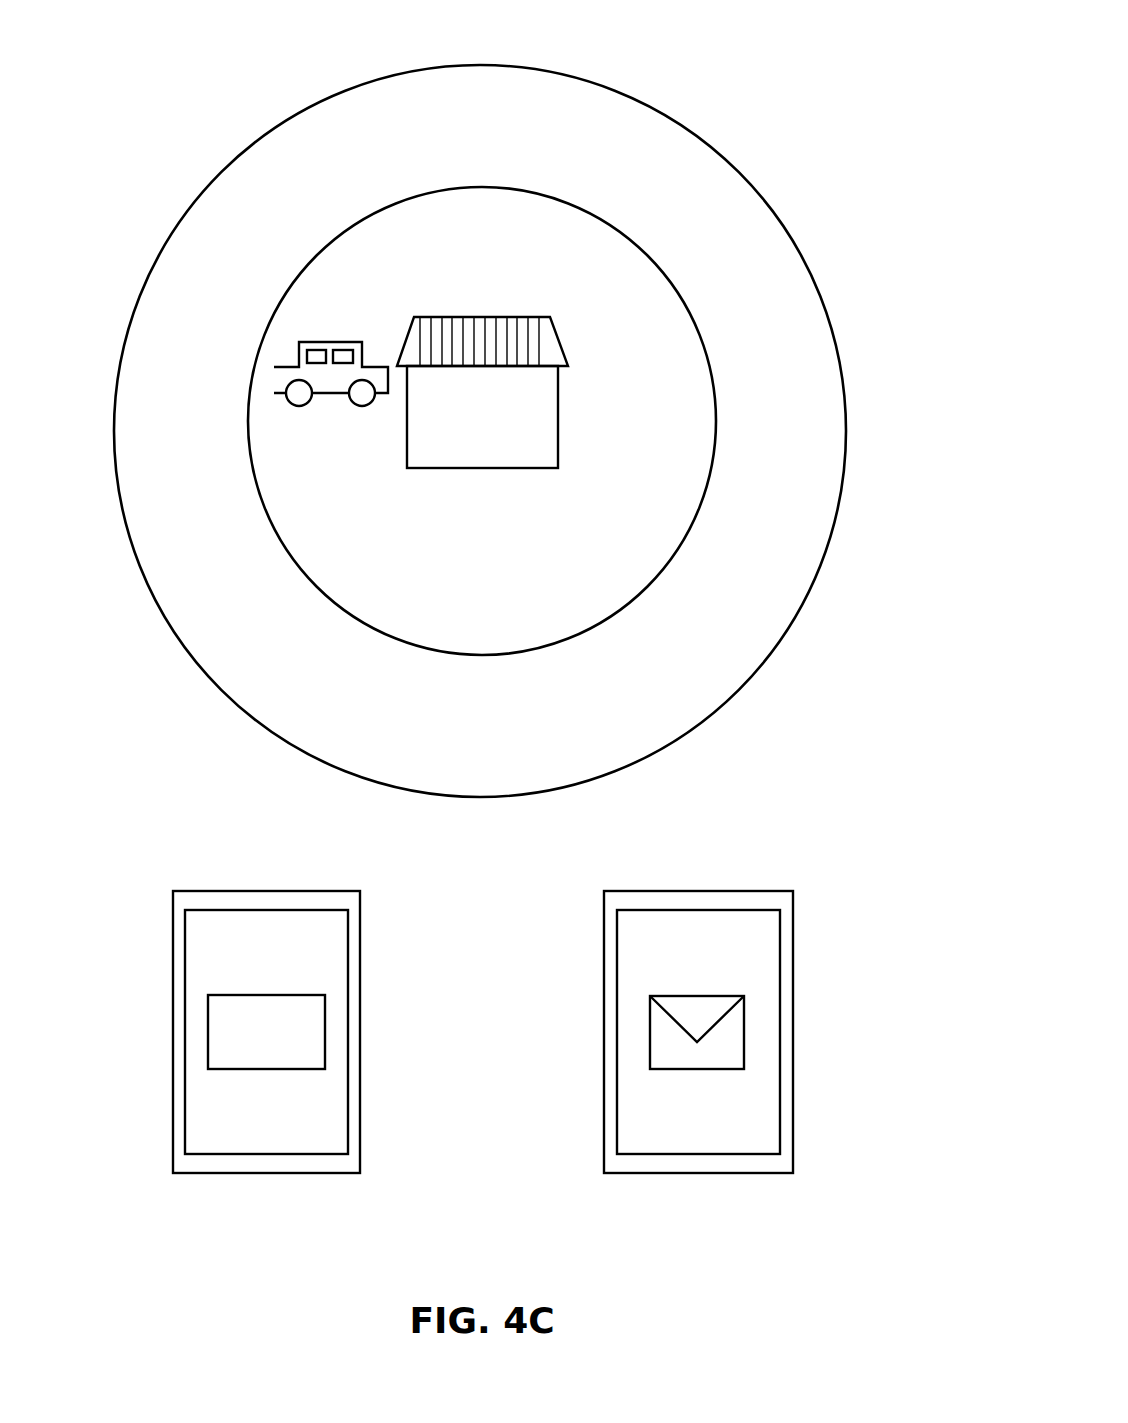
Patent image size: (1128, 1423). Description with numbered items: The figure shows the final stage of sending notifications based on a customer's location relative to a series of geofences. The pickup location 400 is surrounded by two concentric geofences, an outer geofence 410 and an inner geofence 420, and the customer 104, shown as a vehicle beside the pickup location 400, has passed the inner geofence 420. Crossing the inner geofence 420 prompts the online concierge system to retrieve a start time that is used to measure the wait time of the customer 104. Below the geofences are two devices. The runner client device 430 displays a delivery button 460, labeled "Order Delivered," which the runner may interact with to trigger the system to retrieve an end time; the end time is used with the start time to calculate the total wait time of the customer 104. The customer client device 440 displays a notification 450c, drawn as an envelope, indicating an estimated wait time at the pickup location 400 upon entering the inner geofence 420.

The outer geofence 410 is at (660, 110).
The inner geofence 420 is at (687, 300).
The customer 104 is at (331, 396).
The pickup location 400 is at (482, 392).
The runner client device 430 is at (266, 1071).
The delivery button 460 is at (236, 995).
The customer client device 440 is at (698, 1077).
The notification 450c is at (727, 995).